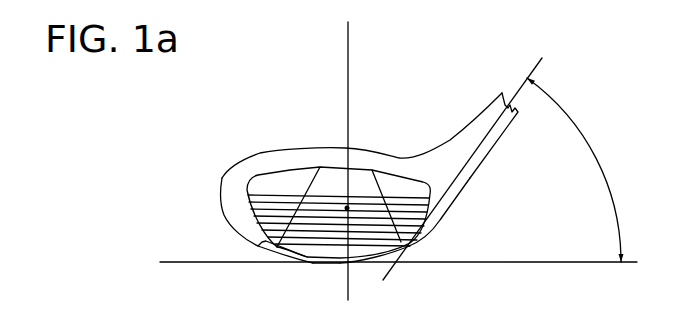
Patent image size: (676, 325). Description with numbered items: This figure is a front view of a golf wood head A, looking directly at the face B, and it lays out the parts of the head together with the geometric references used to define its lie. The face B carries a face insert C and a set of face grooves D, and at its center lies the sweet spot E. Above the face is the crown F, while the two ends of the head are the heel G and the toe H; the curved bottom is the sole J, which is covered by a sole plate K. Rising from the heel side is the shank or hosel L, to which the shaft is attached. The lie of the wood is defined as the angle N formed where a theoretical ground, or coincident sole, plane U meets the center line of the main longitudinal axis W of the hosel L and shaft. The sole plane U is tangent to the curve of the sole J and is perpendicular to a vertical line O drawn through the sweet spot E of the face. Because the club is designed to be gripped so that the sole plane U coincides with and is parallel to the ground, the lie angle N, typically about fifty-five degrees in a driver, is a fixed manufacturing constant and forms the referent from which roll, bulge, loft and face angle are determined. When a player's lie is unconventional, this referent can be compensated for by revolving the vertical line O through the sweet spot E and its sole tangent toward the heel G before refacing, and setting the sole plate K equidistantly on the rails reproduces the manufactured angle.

The golf wood head A is at (228, 164).
The face B is at (283, 180).
The face insert C is at (318, 190).
The face grooves D is at (268, 207).
The sweet spot E is at (347, 208).
The crown F is at (357, 158).
The heel G is at (432, 217).
The toe H is at (228, 188).
The sole J is at (338, 266).
The sole plate K is at (307, 257).
The hosel L is at (484, 151).
The lie angle N is at (597, 167).
The vertical line O is at (350, 33).
The sole plane U is at (180, 262).
The main longitudinal axis W is at (534, 68).